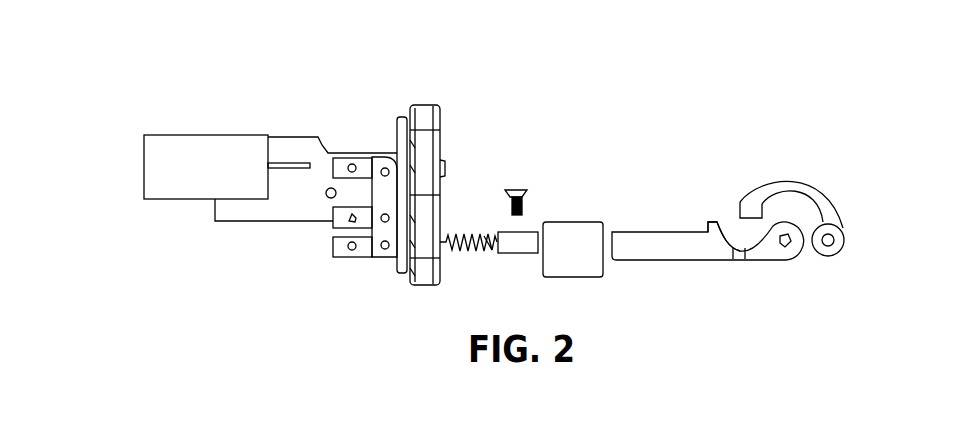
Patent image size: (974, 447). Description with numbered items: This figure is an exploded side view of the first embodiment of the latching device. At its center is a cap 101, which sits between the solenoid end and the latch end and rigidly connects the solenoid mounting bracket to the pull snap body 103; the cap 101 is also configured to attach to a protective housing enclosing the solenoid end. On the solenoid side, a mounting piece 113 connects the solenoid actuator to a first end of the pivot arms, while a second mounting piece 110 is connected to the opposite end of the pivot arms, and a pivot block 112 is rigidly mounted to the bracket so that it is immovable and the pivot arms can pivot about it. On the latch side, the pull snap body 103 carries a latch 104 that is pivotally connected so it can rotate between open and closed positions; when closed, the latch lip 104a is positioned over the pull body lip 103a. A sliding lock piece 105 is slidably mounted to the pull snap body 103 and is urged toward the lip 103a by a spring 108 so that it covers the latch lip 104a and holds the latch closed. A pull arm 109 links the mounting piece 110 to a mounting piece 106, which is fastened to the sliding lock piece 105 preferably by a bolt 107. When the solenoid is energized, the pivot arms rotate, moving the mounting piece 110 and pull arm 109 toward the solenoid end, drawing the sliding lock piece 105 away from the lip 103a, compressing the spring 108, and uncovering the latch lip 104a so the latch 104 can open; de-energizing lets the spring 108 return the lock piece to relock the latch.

The cap 101 is at (415, 104).
The pull snap body 103 is at (709, 258).
The pull body lip 103a is at (712, 220).
The latch 104 is at (832, 199).
The latch lip 104a is at (750, 200).
The sliding lock piece 105 is at (604, 220).
The mounting piece 106 is at (531, 230).
The bolt 107 is at (520, 186).
The spring 108 is at (485, 230).
The pull arm 109 is at (445, 251).
The mounting piece 110 is at (343, 249).
The pivot block 112 is at (340, 217).
The mounting piece 113 is at (343, 163).